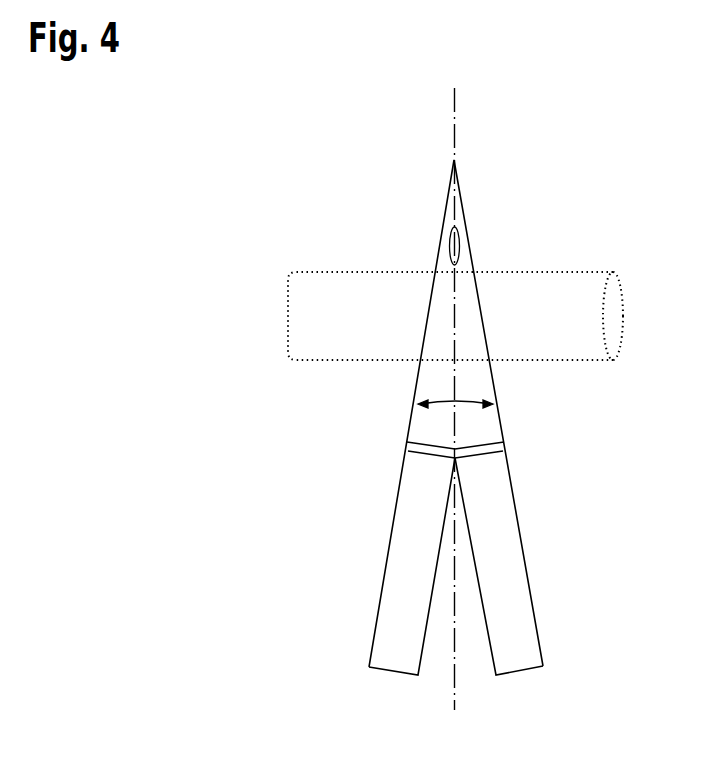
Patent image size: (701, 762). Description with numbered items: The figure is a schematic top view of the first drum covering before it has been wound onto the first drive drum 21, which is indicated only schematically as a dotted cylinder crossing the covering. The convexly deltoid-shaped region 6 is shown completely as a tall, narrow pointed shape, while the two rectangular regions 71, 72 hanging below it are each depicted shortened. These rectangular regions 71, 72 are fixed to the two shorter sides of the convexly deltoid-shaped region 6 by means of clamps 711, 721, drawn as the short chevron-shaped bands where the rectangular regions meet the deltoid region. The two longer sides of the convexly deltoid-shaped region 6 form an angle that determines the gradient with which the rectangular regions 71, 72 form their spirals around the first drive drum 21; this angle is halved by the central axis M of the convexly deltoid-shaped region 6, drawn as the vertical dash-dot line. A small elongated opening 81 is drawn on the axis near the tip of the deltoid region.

The convexly deltoid-shaped region 6 is at (459, 417).
The first drive drum 21 is at (312, 320).
The rectangular region 71 is at (400, 561).
The rectangular region 72 is at (515, 562).
The clamp 711 is at (415, 446).
The clamp 721 is at (500, 448).
The opening 81 is at (449, 244).
The central axis M is at (456, 130).